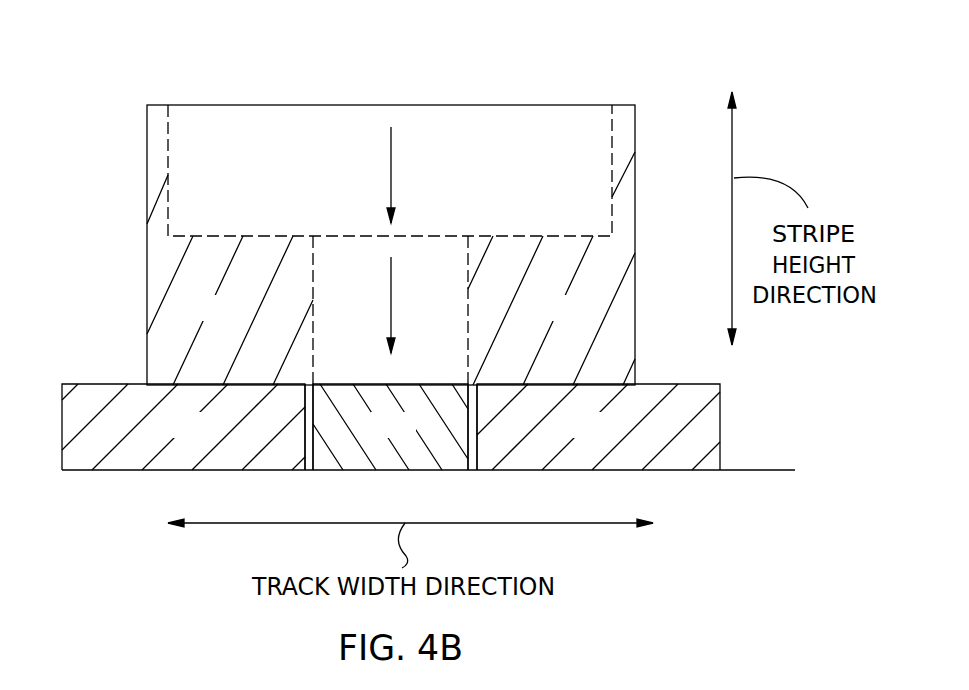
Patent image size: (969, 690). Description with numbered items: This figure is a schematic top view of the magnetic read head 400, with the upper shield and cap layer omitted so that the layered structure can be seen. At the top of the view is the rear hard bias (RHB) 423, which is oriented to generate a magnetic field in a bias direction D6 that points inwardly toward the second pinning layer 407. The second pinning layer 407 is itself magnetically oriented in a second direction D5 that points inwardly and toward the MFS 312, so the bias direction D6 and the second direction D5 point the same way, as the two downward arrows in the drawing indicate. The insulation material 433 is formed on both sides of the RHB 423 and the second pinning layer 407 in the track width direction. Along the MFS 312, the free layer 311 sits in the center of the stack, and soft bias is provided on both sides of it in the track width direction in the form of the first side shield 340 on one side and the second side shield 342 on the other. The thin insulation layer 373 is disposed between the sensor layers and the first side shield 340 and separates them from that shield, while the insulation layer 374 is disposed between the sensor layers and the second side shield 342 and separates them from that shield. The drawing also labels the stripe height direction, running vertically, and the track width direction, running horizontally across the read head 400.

The magnetic read head 400 is at (578, 70).
The rear hard bias 423 is at (224, 156).
The second pinning layer 407 is at (370, 272).
The insulation material 433 is at (573, 325).
The first side shield 340 is at (210, 440).
The free layer 311 is at (417, 442).
The second side shield 342 is at (620, 440).
The insulation layer 373 is at (308, 462).
The insulation layer 374 is at (473, 462).
The MFS 312 is at (771, 470).
The second direction D5 is at (392, 301).
The bias direction D6 is at (392, 170).